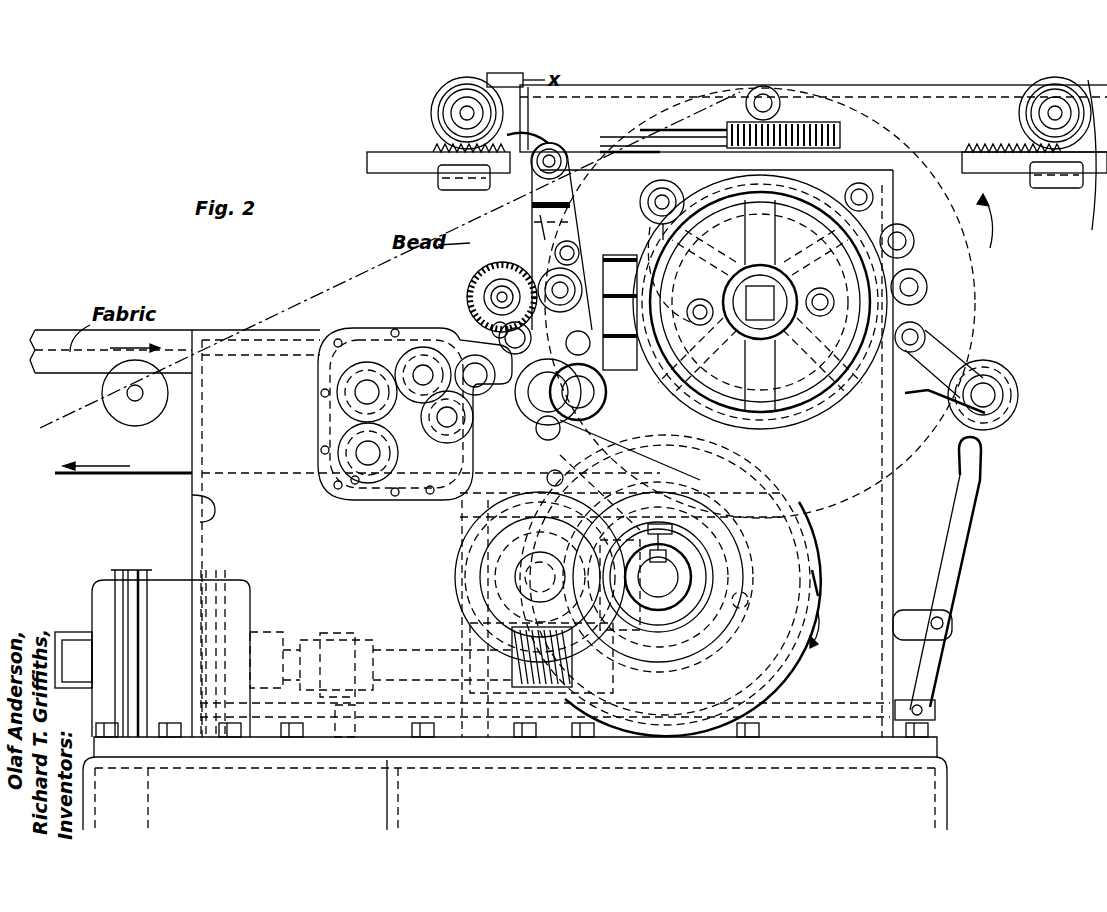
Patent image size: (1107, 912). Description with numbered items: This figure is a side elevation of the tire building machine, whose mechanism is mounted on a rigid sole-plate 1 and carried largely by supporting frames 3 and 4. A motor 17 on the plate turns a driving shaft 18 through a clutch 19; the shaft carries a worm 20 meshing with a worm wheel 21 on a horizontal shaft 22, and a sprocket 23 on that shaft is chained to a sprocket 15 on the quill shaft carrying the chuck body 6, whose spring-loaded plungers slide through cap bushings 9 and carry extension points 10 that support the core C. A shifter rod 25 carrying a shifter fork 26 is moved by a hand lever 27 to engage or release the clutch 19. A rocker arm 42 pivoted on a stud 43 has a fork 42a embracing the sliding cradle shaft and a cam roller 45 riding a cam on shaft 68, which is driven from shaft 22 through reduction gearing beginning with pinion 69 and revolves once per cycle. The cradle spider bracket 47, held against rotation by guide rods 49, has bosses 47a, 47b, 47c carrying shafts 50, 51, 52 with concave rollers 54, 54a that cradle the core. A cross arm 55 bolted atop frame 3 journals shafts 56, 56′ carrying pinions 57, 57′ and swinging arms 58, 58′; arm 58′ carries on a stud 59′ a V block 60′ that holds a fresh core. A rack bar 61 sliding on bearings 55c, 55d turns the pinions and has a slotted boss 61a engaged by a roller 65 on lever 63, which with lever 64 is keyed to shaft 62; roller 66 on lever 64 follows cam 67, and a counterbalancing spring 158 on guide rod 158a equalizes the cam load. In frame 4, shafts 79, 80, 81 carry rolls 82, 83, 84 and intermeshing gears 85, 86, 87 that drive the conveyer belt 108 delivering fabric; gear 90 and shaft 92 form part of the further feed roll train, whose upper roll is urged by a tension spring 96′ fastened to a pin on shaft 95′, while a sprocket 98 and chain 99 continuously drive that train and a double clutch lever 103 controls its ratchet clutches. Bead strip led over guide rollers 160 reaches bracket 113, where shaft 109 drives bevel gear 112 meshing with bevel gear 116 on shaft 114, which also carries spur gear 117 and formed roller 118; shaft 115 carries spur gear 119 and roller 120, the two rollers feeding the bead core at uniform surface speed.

The sole-plate 1 is at (920, 791).
The supporting frame 3 is at (893, 527).
The supporting frame 4 is at (192, 507).
The chuck body 6 is at (834, 305).
The cap bushings 9 is at (926, 336).
The extension points 10 is at (938, 348).
The sprocket 15 is at (730, 625).
The motor 17 is at (160, 582).
The driving shaft 18 is at (405, 650).
The clutch 19 is at (352, 638).
The worm 20 is at (515, 690).
The worm wheel 21 is at (520, 597).
The horizontal shaft 22 is at (520, 577).
The sprocket 23 is at (520, 560).
The shifter rod 25 is at (808, 664).
The shifter fork 26 is at (343, 737).
The hand lever 27 is at (950, 578).
The rocker arm 42 is at (740, 372).
The fork 42a is at (792, 290).
The stud 43 is at (805, 482).
The cam roller 45 is at (748, 603).
The spider bracket 47 is at (895, 268).
The boss 47a is at (986, 380).
The boss 47b is at (816, 570).
The boss 47c is at (590, 481).
The guide rods 49 is at (815, 326).
The shaft 50 is at (1000, 410).
The shaft 51 is at (880, 528).
The shaft 52 is at (525, 402).
The concave roller 54 is at (1010, 383).
The roller 54a is at (800, 548).
The cross arm 55 is at (813, 118).
The bearing 55c is at (1057, 190).
The bearing 55d is at (466, 185).
The shaft 56 is at (1030, 115).
The shaft 56′ is at (440, 113).
The pinion 57 is at (1022, 105).
The pinion 57′ is at (432, 105).
The swinging arm 58 is at (1094, 195).
The swinging arm 58′ is at (624, 150).
The stud 59′ is at (745, 212).
The V block 60′ is at (806, 220).
The rack bar 61 is at (420, 168).
The slotted boss 61a is at (530, 134).
The shaft 62 is at (592, 405).
The lever 63 is at (538, 206).
The lever 64 is at (630, 432).
The roller 65 is at (552, 143).
The roller 66 is at (778, 400).
The cam 67 is at (814, 592).
The shaft 68 is at (667, 600).
The pinion 69 is at (540, 432).
The shaft 79 is at (465, 365).
The shaft 80 is at (330, 372).
The shaft 81 is at (356, 485).
The roll 82 is at (432, 430).
The roll 83 is at (337, 396).
The roll 84 is at (338, 455).
The gear 85 is at (415, 362).
The gear 86 is at (356, 350).
The gear 87 is at (372, 485).
The gear 90 is at (430, 495).
The shaft 92 is at (519, 345).
The shaft 95′ is at (492, 330).
The tension spring 96′ is at (578, 345).
The sprocket 98 is at (648, 530).
The chain 99 is at (548, 474).
The double clutch lever 103 is at (462, 500).
The conveyer belt 108 is at (168, 473).
The shaft 109 is at (496, 292).
The bevel gear 112 is at (470, 293).
The bracket 113 is at (663, 242).
The shaft 114 is at (712, 332).
The shaft 115 is at (614, 252).
The bevel gear 116 is at (546, 280).
The spur gear 117 is at (553, 255).
The formed roller 118 is at (704, 298).
The spur gear 119 is at (540, 224).
The roller 120 is at (712, 236).
The counterbalancing spring 158 is at (781, 110).
The guide rod 158a is at (702, 133).
The guide rollers 160 is at (120, 415).
The core C is at (985, 303).